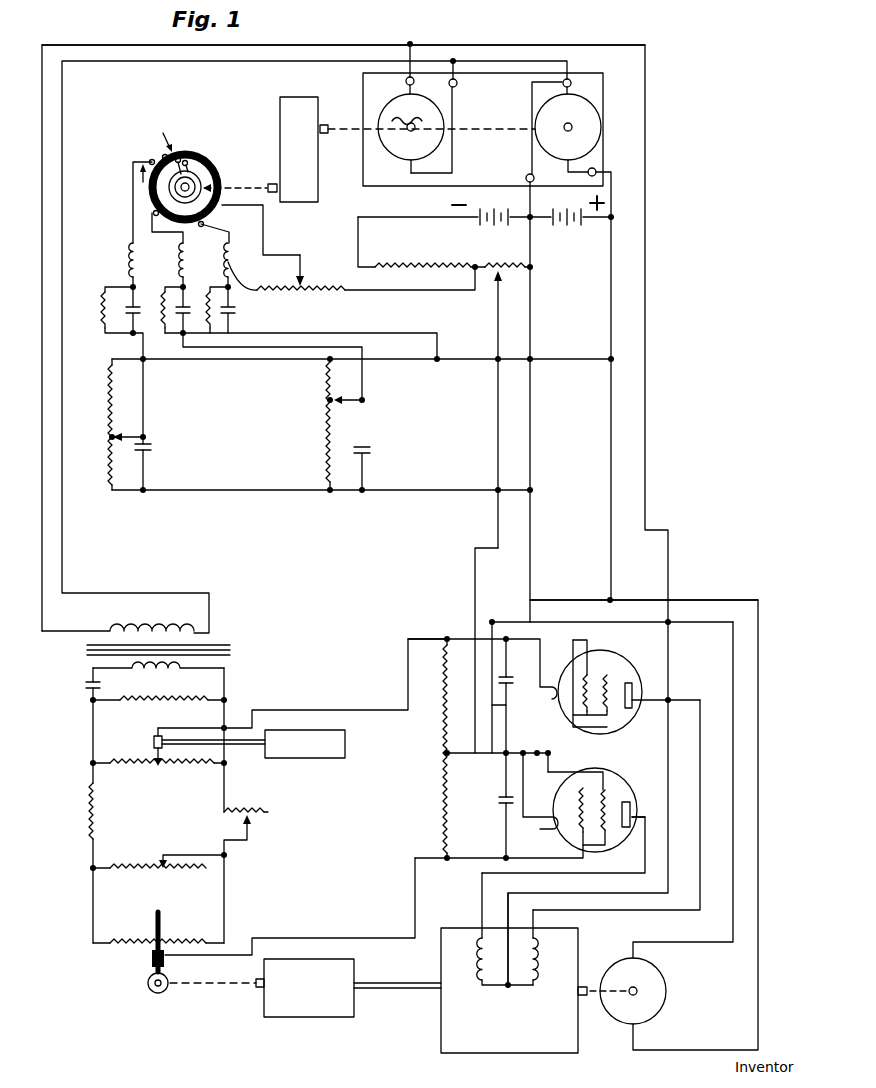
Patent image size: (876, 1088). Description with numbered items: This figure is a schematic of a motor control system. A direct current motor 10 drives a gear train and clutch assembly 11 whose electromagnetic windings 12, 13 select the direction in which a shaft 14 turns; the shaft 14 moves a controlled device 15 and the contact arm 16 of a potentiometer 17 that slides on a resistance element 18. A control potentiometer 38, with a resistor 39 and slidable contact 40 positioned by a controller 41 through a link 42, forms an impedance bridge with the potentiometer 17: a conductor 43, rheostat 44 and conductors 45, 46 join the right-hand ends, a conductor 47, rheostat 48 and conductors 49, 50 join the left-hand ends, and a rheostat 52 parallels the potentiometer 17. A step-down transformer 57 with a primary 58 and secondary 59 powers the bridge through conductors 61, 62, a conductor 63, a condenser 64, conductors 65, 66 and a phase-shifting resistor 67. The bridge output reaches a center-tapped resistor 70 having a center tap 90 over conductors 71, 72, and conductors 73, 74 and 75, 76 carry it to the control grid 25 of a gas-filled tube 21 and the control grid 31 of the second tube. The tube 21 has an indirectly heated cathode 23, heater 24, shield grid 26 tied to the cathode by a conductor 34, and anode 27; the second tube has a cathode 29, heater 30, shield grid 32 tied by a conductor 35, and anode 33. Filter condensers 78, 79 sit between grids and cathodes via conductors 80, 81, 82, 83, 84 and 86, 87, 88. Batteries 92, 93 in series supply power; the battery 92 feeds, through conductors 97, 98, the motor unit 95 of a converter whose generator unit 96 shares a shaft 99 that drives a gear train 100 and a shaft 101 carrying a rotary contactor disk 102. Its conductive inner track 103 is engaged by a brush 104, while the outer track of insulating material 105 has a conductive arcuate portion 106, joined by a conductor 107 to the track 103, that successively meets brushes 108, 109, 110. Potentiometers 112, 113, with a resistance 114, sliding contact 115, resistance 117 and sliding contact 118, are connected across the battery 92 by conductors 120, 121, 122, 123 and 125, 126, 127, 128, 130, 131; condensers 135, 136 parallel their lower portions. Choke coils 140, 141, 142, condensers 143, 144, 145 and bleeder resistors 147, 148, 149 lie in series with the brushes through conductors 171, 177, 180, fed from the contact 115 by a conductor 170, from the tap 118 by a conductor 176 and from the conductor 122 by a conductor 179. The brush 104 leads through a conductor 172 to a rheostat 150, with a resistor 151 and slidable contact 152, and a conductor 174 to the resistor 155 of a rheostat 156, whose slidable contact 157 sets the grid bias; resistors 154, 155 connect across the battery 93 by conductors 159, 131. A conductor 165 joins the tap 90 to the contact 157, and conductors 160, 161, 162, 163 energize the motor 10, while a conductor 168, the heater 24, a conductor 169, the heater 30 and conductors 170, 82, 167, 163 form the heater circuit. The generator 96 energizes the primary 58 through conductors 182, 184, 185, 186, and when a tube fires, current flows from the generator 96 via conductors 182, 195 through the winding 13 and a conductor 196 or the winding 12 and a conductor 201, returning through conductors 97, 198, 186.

The motor 10 is at (665, 1002).
The gear train and clutches mechanism 11 is at (441, 1038).
The electromagnetic winding 12 is at (476, 960).
The electromagnetic winding 13 is at (540, 963).
The shaft 14 is at (258, 990).
The controlled device 15 is at (336, 1017).
The contact arm 16 is at (150, 946).
The control potentiometer 17 is at (145, 965).
The resistance element 18 is at (168, 930).
The electronic discharge tube 21 is at (627, 664).
The cathode 23 is at (584, 672).
The heater 24 is at (573, 685).
The control grid 25 is at (600, 672).
The shield grid 26 is at (612, 716).
The anode 27 is at (633, 684).
The cathode 29 is at (556, 836).
The heater 30 is at (550, 825).
The control grid 31 is at (598, 848).
The shield grid 32 is at (615, 785).
The anode 33 is at (632, 805).
The conductor 34 is at (572, 736).
The conductor 35 is at (612, 790).
The control potentiometer 38 is at (152, 757).
The resistor 39 is at (186, 765).
The slidable contact 40 is at (165, 745).
The controller 41 is at (300, 758).
The link 42 is at (246, 746).
The conductor 43 is at (228, 790).
The rheostat 44 is at (259, 818).
The conductor 45 is at (240, 840).
The conductor 46 is at (228, 900).
The conductor 47 is at (90, 783).
The rheostat 48 is at (82, 821).
The conductor 49 is at (90, 870).
The conductor 50 is at (90, 910).
The rheostat 52 is at (160, 858).
The step-down transformer 57 is at (222, 643).
The primary 58 is at (145, 628).
The secondary 59 is at (138, 672).
The conductor 61 is at (228, 680).
The conductor 62 is at (228, 714).
The conductor 63 is at (93, 672).
The condenser 64 is at (86, 686).
The conductor 65 is at (90, 697).
The conductor 66 is at (92, 738).
The resistor 67 is at (160, 698).
The center-tapped resistor 70 is at (434, 721).
The conductor 71 is at (360, 708).
The conductor 72 is at (343, 937).
The conductor 73 is at (455, 636).
The conductor 74 is at (527, 620).
The conductor 75 is at (472, 860).
The conductor 76 is at (566, 873).
The condenser 78 is at (514, 673).
The condenser 79 is at (505, 806).
The conductor 80 is at (507, 650).
The conductor 81 is at (490, 705).
The conductor 82 is at (518, 750).
The conductor 83 is at (557, 756).
The conductor 84 is at (536, 700).
The conductor 86 is at (503, 840).
The conductor 87 is at (503, 772).
The conductor 88 is at (550, 776).
The center tap 90 is at (444, 760).
The battery 92 is at (560, 228).
The battery 93 is at (482, 226).
The motor unit 95 is at (590, 110).
The generator unit 96 is at (393, 105).
The conductor 97 is at (530, 150).
The conductor 98 is at (612, 214).
The shaft 99 is at (350, 131).
The gear train 100 is at (280, 108).
The shaft 101 is at (250, 186).
The rotary contactor disk 102 is at (160, 126).
The inner track 103 is at (188, 162).
The brush 104 is at (212, 184).
The insulating material 105 is at (146, 186).
The arcuate portion 106 is at (164, 154).
The conductor 107 is at (180, 158).
The brush 108 is at (152, 160).
The brush 109 is at (153, 212).
The brush 110 is at (205, 224).
The potentiometer 112 is at (108, 423).
The potentiometer 113 is at (326, 402).
The resistance 114 is at (108, 465).
The sliding contact 115 is at (115, 435).
The resistance 117 is at (326, 445).
The sliding contact 118 is at (346, 384).
The conductor 120 is at (244, 361).
The conductor 121 is at (404, 362).
The conductor 122 is at (576, 362).
The conductor 123 is at (609, 281).
The conductor 125 is at (130, 492).
The conductor 126 is at (277, 492).
The conductor 127 is at (348, 492).
The conductor 128 is at (426, 490).
The conductor 130 is at (533, 316).
The conductor 131 is at (532, 268).
The condenser 135 is at (146, 446).
The condenser 136 is at (366, 447).
The choke coil 140 is at (138, 268).
The choke coil 141 is at (188, 258).
The choke coil 142 is at (232, 262).
The condenser 143 is at (136, 305).
The condenser 144 is at (188, 300).
The condenser 145 is at (230, 316).
The resistor 147 is at (103, 321).
The resistor 148 is at (143, 323).
The resistor 149 is at (207, 336).
The rheostat 150 is at (314, 280).
The resistor 151 is at (322, 292).
The slidable contact 152 is at (260, 271).
The resistor 154 is at (413, 264).
The resistor 155 is at (480, 282).
The rheostat 156 is at (499, 263).
The slidable contact 157 is at (504, 285).
The conductor 159 is at (413, 215).
The conductor 160 is at (608, 449).
The conductor 161 is at (718, 599).
The conductor 162 is at (700, 942).
The conductor 163 is at (533, 518).
The conductor 165 is at (472, 553).
The conductor 167 is at (498, 636).
The conductor 168 is at (576, 598).
The conductor 169 is at (510, 684).
The conductor 170 is at (145, 378).
The conductor 171 is at (131, 224).
The conductor 172 is at (265, 237).
The conductor 174 is at (396, 292).
The conductor 176 is at (358, 390).
The conductor 177 is at (166, 232).
The conductor 179 is at (354, 333).
The conductor 180 is at (222, 224).
The conductor 182 is at (415, 52).
The conductor 184 is at (330, 44).
The conductor 185 is at (146, 592).
The conductor 186 is at (455, 112).
The conductor 195 is at (646, 86).
The conductor 196 is at (700, 840).
The conductor 198 is at (500, 62).
The conductor 201 is at (480, 898).